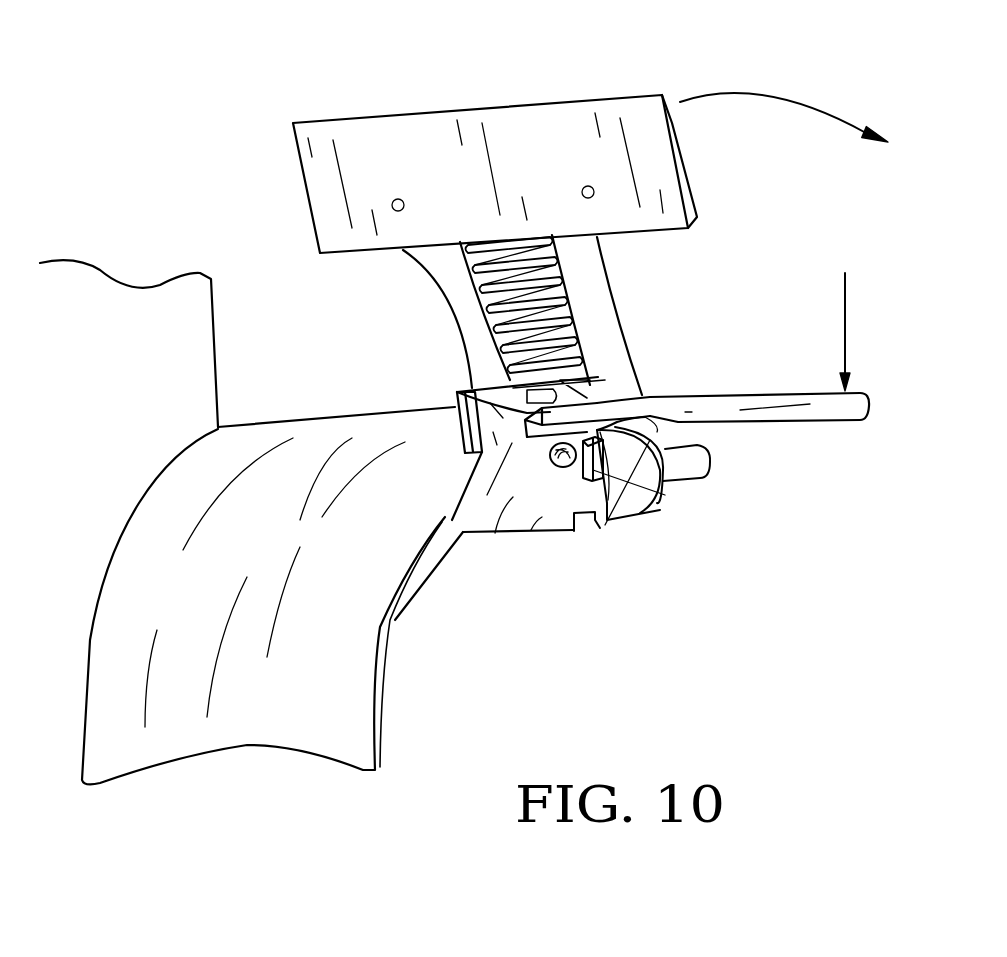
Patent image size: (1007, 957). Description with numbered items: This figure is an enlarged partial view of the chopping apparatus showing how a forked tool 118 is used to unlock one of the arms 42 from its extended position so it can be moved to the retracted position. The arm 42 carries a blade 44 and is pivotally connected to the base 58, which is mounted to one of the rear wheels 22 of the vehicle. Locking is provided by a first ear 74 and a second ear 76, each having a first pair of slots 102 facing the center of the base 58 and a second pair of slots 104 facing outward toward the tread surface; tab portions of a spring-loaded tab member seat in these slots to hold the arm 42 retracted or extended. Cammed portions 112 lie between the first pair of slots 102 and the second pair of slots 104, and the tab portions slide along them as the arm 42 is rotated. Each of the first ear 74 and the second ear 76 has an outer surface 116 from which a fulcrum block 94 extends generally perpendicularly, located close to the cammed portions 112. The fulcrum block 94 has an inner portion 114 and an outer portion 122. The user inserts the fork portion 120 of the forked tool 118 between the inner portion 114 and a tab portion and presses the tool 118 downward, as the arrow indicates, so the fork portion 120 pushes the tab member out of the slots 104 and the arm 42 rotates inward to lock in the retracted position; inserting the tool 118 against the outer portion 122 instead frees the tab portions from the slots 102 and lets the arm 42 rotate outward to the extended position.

The rear wheel 22 is at (198, 280).
The arm 42 is at (588, 276).
The blade 44 is at (590, 96).
The base 58 is at (353, 700).
The first ear 74 is at (535, 518).
The second ear 76 is at (665, 505).
The fulcrum block 94 is at (655, 508).
The first pair of slots 102 is at (576, 534).
The second pair of slots 104 is at (473, 393).
The cammed portions 112 is at (708, 478).
The inner portion 114 is at (607, 397).
The outer surface 116 is at (490, 532).
The forked tool 118 is at (802, 415).
The fork portion 120 is at (593, 378).
The outer portion 122 is at (585, 470).